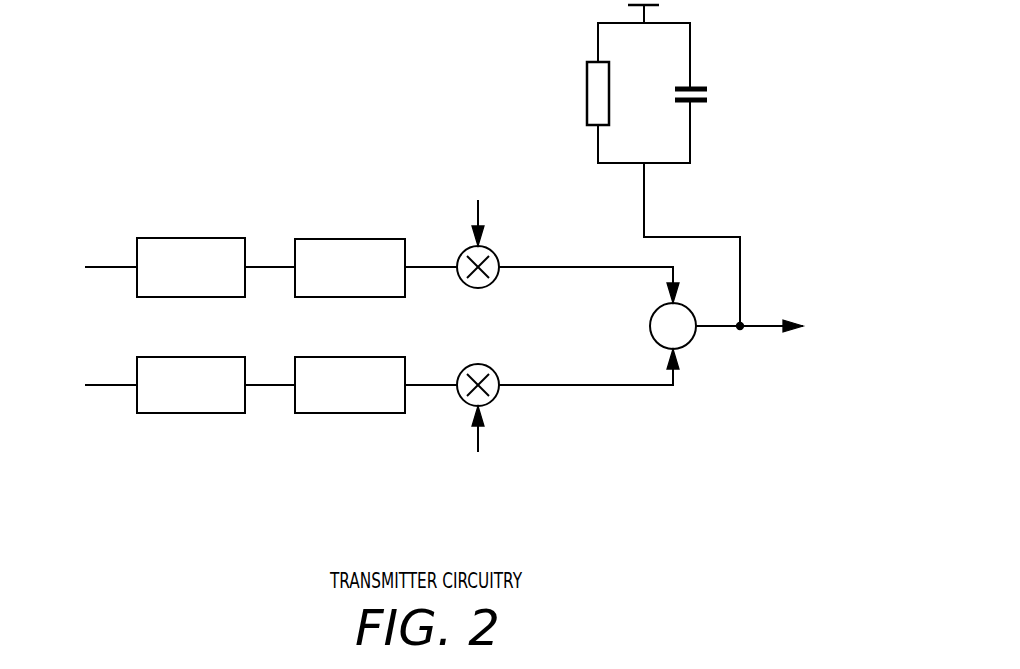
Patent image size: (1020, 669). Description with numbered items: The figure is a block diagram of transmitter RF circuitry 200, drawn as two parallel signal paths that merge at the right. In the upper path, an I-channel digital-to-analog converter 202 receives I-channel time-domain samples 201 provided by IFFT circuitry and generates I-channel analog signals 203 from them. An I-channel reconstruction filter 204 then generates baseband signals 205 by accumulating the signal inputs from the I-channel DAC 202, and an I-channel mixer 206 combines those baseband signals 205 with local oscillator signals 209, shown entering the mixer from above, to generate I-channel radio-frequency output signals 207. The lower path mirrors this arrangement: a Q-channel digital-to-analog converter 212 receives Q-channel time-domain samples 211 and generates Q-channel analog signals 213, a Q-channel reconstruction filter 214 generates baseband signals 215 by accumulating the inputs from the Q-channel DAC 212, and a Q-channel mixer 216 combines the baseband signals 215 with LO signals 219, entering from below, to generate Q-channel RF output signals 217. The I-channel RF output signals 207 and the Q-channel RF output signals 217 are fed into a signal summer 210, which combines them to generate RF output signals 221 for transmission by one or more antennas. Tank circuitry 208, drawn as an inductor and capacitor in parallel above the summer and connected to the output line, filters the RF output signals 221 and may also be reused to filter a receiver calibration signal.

The transmitter RF circuitry 200 is at (145, 68).
The I-channel time-domain samples 201 is at (104, 263).
The I-channel digital-to-analog converter 202 is at (172, 238).
The I-channel analog signals 203 is at (270, 263).
The I-channel reconstruction filter 204 is at (338, 239).
The baseband signals 205 is at (430, 263).
The I-channel mixer 206 is at (486, 287).
The I-channel radio-frequency output signals 207 is at (600, 263).
The tank circuitry 208 is at (690, 140).
The local oscillator signals 209 is at (478, 209).
The signal summer 210 is at (682, 305).
The Q-channel time-domain samples 211 is at (104, 381).
The Q-channel digital-to-analog converter 212 is at (172, 357).
The Q-channel analog signals 213 is at (270, 381).
The Q-channel reconstruction filter 214 is at (338, 357).
The baseband signals 215 is at (430, 381).
The Q-channel mixer 216 is at (486, 364).
The Q-channel RF output signals 217 is at (600, 381).
The LO signals 219 is at (478, 440).
The RF output signals 221 is at (753, 333).